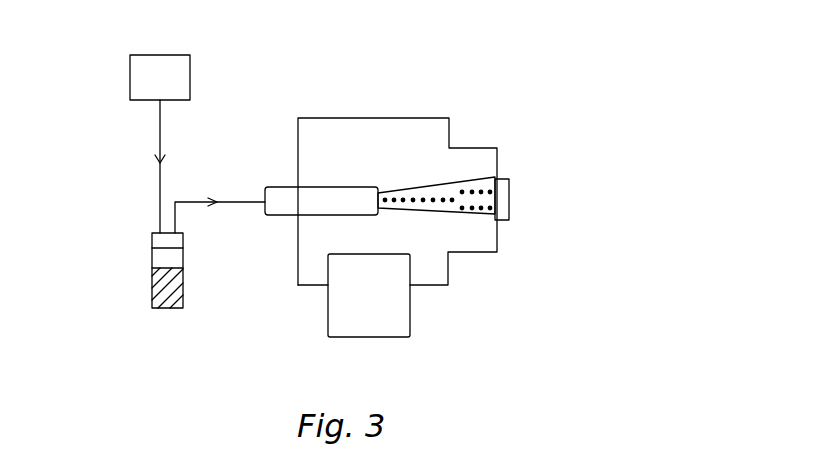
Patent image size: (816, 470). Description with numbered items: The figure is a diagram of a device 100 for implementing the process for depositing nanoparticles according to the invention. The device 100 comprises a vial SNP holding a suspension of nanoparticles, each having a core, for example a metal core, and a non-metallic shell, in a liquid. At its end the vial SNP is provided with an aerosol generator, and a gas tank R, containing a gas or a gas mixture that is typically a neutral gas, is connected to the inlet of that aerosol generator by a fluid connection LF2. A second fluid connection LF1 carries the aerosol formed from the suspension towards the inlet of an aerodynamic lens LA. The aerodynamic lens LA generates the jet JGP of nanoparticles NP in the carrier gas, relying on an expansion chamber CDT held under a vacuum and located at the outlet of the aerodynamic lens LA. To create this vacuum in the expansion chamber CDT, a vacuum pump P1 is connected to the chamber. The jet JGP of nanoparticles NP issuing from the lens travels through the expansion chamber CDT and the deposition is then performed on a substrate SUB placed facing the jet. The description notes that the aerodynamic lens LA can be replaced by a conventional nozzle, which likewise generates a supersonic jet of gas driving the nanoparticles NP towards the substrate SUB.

The gas tank R is at (143, 54).
The fluid connection LF2 is at (158, 197).
The fluid connection LF1 is at (249, 191).
The vial SNP is at (141, 288).
The device 100 is at (170, 365).
The expansion chamber CDT is at (320, 140).
The aerodynamic lens LA is at (350, 200).
The jet JGP is at (437, 185).
The nanoparticles NP is at (466, 212).
The substrate SUB is at (514, 196).
The vacuum pump P1 is at (360, 338).